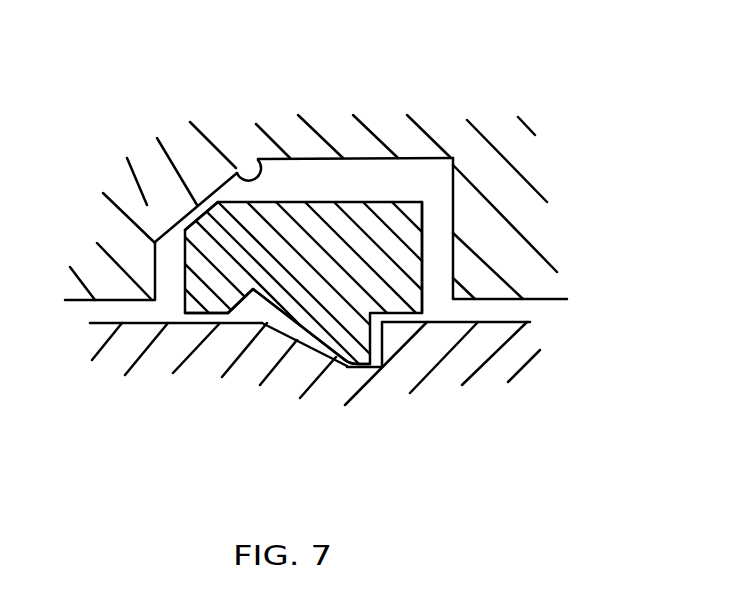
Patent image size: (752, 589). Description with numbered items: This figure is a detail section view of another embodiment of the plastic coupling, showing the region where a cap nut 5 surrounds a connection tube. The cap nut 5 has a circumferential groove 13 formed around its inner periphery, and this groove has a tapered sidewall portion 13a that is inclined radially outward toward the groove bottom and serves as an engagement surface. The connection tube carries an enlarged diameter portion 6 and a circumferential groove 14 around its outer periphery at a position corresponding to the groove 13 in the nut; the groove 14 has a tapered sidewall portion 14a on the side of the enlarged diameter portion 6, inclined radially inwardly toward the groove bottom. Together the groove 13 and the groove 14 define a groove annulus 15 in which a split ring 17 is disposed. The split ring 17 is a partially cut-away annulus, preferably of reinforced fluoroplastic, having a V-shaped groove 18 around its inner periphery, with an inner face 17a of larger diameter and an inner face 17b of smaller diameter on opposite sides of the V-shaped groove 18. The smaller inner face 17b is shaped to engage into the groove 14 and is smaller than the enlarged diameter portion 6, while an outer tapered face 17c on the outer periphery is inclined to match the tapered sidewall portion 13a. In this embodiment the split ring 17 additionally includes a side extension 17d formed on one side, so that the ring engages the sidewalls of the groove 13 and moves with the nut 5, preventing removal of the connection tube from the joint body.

The cap nut 5 is at (180, 215).
The enlarged diameter portion 6 is at (497, 362).
The circumferential groove 13 is at (320, 185).
The tapered sidewall portion 13a is at (258, 158).
The circumferential groove 14 is at (320, 358).
The tapered sidewall portion 14a is at (300, 343).
The groove annulus 15 is at (438, 228).
The split ring 17 is at (370, 232).
The inner face of larger diameter 17a is at (195, 318).
The inner face of smaller diameter 17b is at (365, 368).
The outer tapered face 17c is at (195, 208).
The side extension 17d is at (410, 302).
The V-shaped groove 18 is at (252, 293).